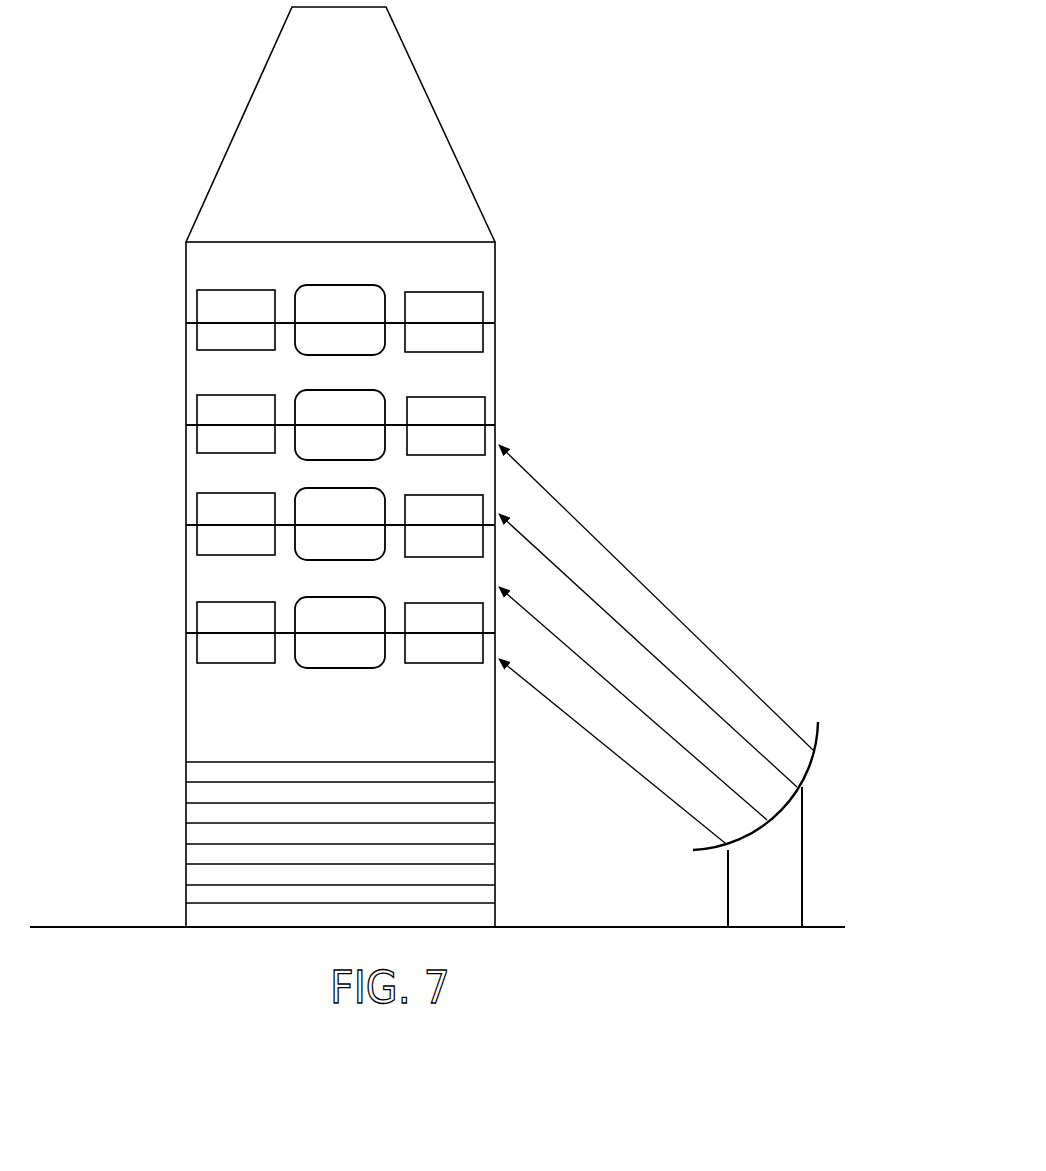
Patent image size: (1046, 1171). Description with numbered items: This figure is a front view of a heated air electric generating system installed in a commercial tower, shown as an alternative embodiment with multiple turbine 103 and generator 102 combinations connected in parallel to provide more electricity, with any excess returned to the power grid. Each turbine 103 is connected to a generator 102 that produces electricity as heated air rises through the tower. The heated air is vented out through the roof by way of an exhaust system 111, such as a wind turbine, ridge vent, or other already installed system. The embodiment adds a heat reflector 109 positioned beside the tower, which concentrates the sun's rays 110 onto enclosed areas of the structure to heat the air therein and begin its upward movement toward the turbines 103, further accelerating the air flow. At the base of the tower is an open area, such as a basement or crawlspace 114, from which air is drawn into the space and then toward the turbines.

The generator 102 is at (487, 410).
The turbine 103 is at (386, 400).
The heat reflector 109 is at (815, 775).
The sun's rays 110 is at (652, 588).
The exhaust system 111 is at (443, 132).
The basement or crawlspace 114 is at (186, 857).